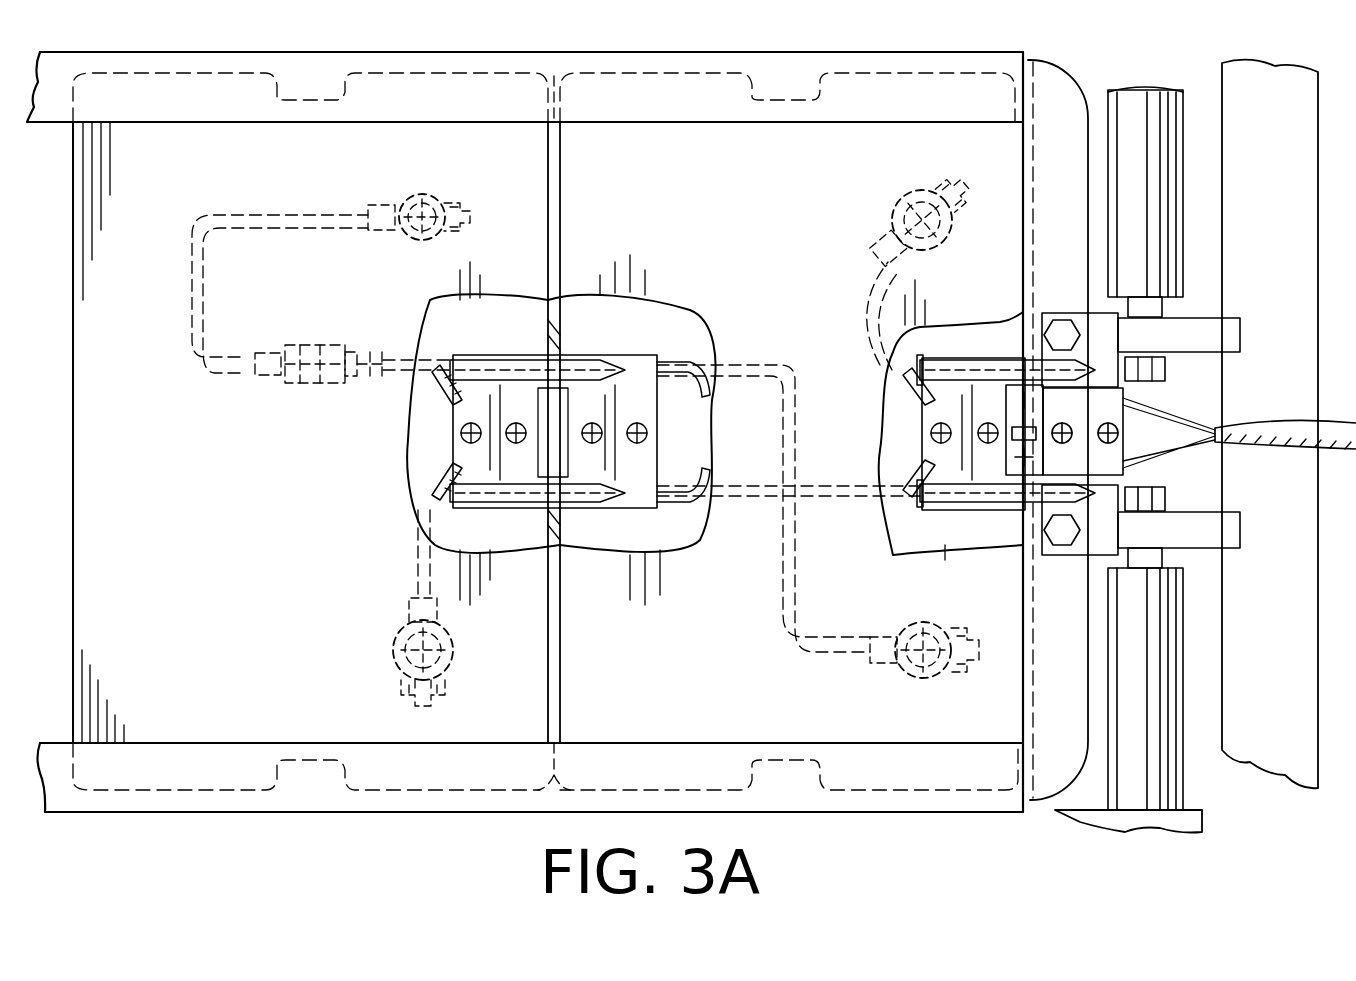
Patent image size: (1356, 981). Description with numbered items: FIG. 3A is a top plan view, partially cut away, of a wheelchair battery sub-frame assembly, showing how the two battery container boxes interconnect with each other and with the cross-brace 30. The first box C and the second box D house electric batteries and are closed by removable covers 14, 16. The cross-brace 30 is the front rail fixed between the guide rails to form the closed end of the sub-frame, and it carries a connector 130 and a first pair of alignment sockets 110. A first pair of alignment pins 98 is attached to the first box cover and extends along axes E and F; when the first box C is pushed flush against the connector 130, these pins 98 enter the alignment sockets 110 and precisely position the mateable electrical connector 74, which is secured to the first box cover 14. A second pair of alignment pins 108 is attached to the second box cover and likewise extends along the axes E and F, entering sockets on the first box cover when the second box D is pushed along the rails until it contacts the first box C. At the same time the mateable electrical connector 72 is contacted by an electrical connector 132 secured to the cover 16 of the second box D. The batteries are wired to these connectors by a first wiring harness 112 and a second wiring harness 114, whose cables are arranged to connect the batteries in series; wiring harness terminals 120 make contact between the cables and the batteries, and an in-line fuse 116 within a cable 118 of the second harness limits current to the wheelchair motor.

The removable cover 14 is at (628, 147).
The removable cover 16 is at (178, 143).
The cross-brace 30 is at (1052, 95).
The mateable electrical connector 72 is at (652, 418).
The mateable electrical connector 74 is at (925, 432).
The first pair of alignment pins 98 is at (958, 362).
The second pair of alignment pins 108 is at (605, 365).
The first pair of alignment sockets 110 is at (1160, 368).
The first wiring harness 112 is at (772, 360).
The second wiring harness 114 is at (236, 428).
The in-line fuse 116 is at (270, 350).
The cable 118 is at (205, 277).
The wiring harness terminals 120 is at (425, 192).
The connector 130 is at (1100, 455).
The electrical connector 132 is at (455, 435).
The first box C is at (861, 75).
The second box D is at (406, 75).
The axis E is at (440, 510).
The axis F is at (440, 398).